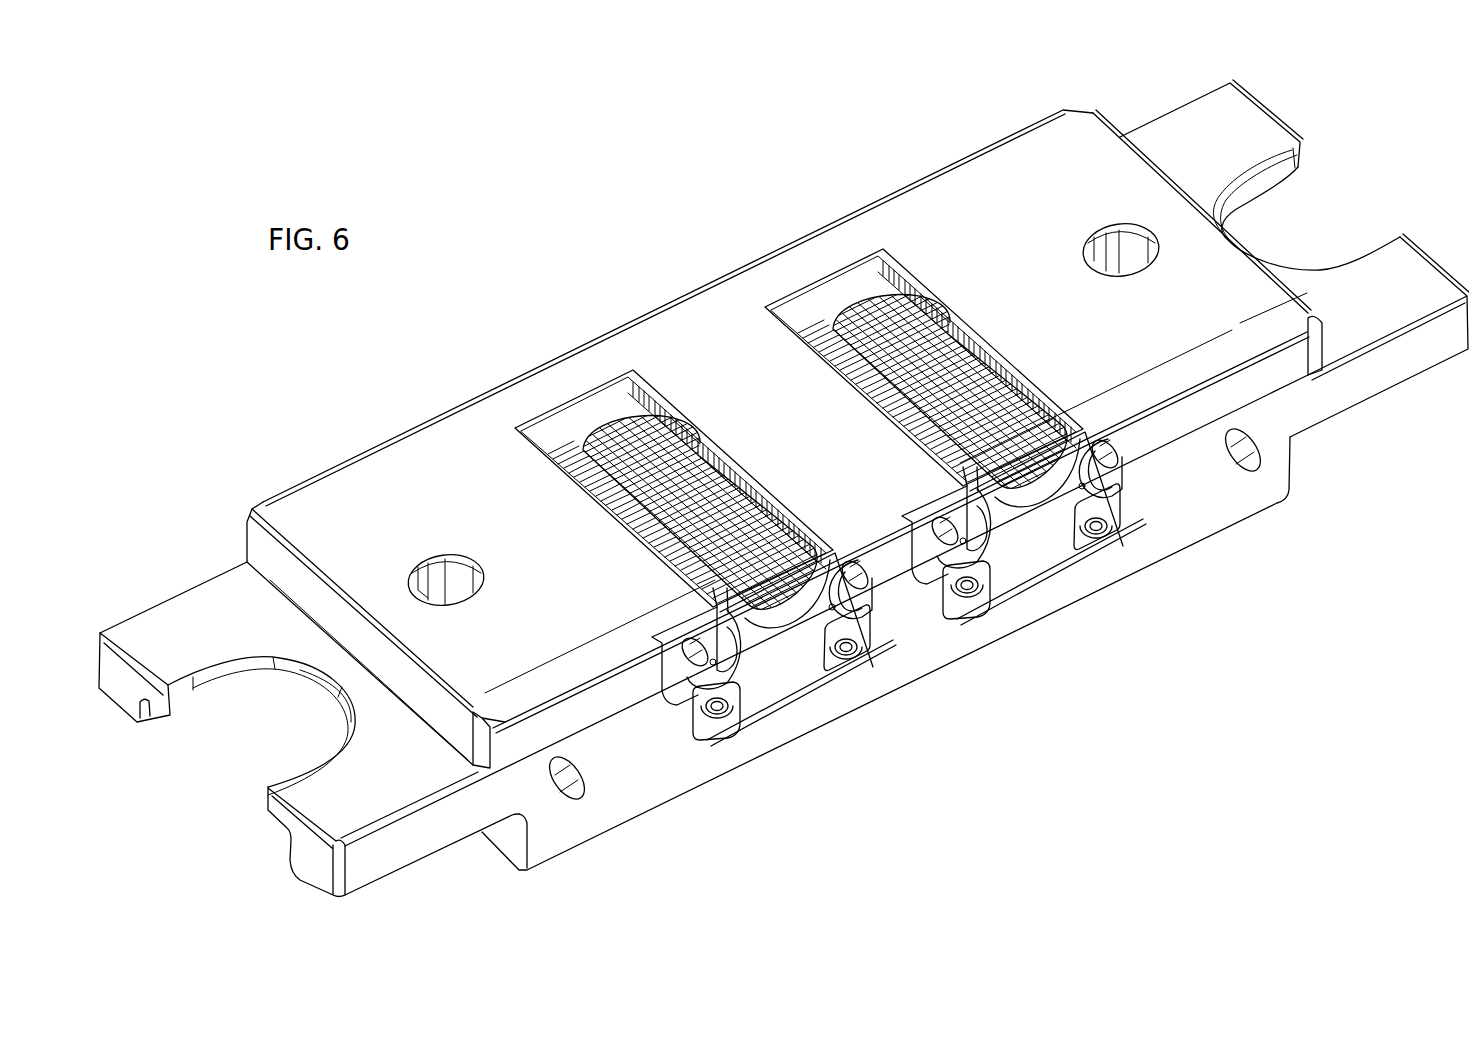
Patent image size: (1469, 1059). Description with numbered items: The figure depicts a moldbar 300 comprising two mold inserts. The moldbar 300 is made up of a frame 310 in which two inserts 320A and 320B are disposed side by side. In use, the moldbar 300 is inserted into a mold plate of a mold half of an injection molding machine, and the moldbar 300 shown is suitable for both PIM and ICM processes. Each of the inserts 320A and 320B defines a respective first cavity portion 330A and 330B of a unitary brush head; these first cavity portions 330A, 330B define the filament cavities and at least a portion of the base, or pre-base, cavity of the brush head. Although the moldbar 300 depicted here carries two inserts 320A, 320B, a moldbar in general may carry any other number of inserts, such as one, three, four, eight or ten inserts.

The moldbar 300 is at (837, 128).
The frame 310 is at (1205, 497).
The insert 320A is at (790, 673).
The insert 320B is at (1037, 550).
The first cavity portion 330A is at (612, 422).
The first cavity portion 330B is at (860, 300).